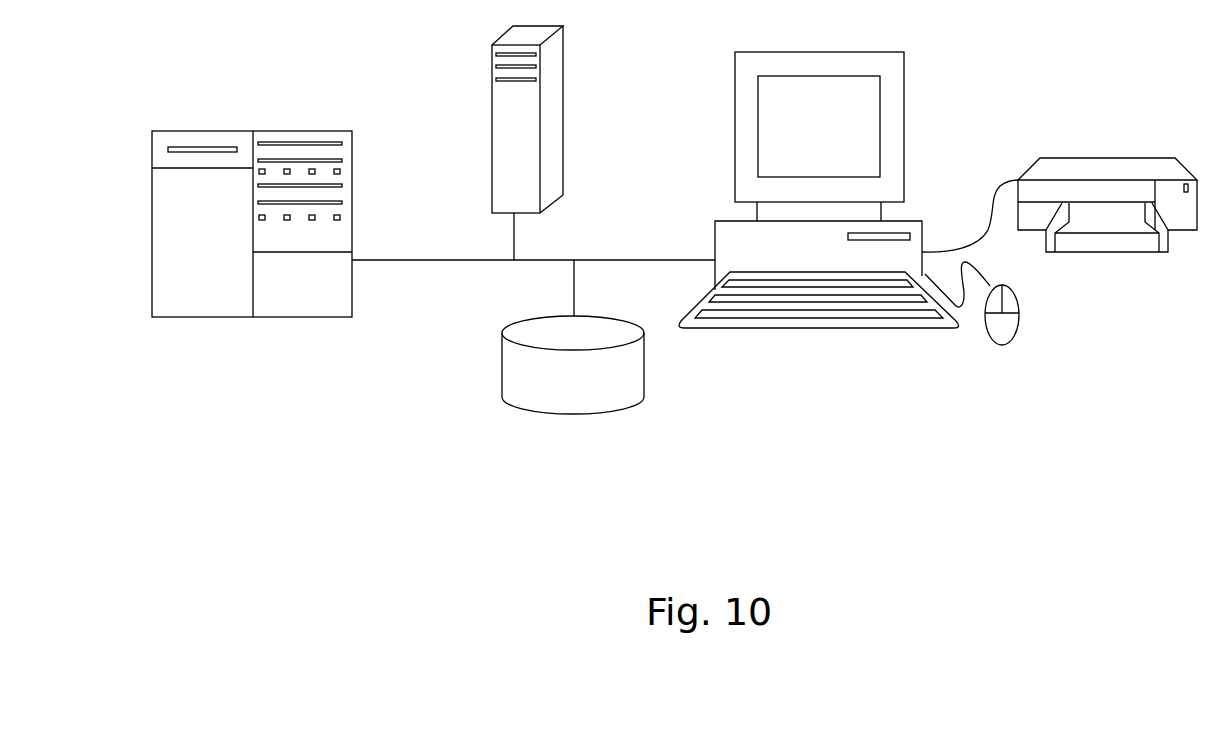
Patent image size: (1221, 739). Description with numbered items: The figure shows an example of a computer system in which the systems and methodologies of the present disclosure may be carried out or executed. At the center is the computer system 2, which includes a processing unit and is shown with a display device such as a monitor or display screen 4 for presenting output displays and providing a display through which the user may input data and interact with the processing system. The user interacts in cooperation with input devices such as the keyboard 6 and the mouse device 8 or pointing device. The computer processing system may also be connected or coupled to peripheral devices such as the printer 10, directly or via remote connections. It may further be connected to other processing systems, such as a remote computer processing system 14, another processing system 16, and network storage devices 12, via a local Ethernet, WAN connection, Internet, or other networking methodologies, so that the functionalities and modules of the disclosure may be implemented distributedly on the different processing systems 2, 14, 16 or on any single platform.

The computer system 2 is at (720, 243).
The display screen 4 is at (904, 123).
The keyboard 6 is at (873, 330).
The mouse device 8 is at (1017, 330).
The printer 10 is at (1107, 158).
The network storage devices 12 is at (590, 410).
The remote computer processing system 14 is at (563, 110).
The processing system 16 is at (293, 131).